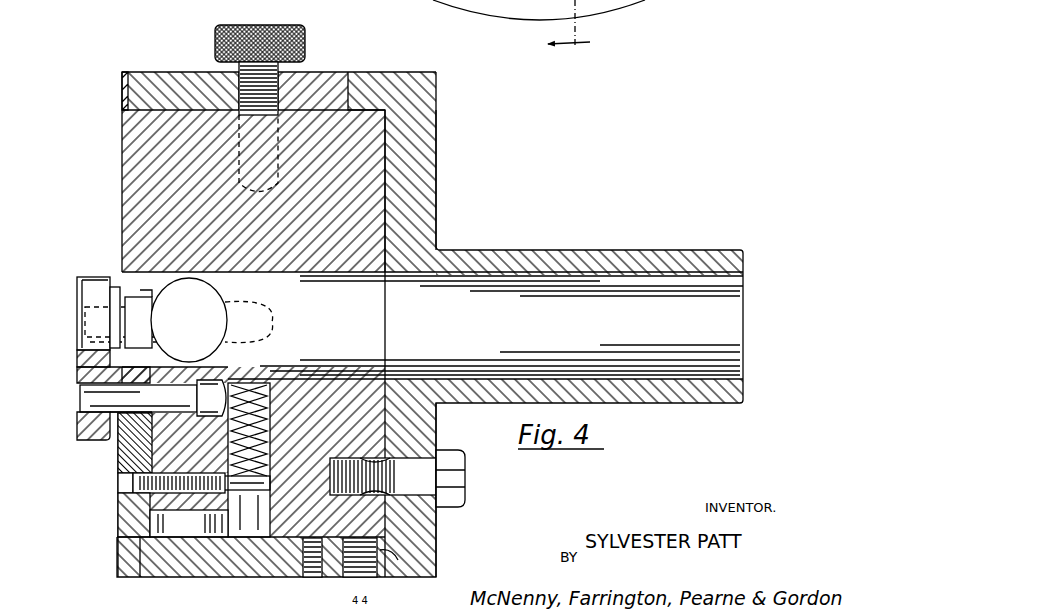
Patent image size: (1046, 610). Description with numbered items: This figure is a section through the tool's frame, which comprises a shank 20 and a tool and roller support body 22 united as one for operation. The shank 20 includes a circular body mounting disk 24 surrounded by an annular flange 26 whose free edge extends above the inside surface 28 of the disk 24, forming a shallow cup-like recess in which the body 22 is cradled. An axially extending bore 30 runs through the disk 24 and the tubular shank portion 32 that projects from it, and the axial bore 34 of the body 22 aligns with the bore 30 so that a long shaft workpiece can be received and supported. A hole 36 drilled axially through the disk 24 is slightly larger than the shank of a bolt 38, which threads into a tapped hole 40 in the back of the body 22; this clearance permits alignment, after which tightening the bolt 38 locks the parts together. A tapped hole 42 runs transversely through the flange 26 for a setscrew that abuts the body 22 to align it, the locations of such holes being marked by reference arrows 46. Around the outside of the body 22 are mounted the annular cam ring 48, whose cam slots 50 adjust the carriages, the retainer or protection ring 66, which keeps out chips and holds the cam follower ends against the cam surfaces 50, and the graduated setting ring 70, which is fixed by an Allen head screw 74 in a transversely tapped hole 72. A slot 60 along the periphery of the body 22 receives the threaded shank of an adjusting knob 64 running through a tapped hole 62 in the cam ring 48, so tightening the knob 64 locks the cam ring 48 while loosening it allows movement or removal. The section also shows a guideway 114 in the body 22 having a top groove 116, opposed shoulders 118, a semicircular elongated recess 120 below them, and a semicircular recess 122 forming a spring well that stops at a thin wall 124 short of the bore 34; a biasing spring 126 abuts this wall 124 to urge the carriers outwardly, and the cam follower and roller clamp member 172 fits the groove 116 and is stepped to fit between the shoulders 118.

The shank 20 is at (450, 118).
The tool and roller support body 22 is at (114, 150).
The body mounting disk 24 is at (438, 166).
The annular flange 26 is at (372, 70).
The inside surface 28 is at (387, 180).
The bore 30 is at (432, 276).
The tubular shank portion 32 is at (710, 248).
The axial bore 34 is at (330, 276).
The hole 36 is at (438, 512).
The bolt 38 is at (468, 484).
The tapped hole 40 is at (405, 458).
The tapped hole 42 is at (396, 562).
The reference arrow 46 is at (585, 48).
The cam ring 48 is at (150, 70).
The cam slot 50 is at (142, 568).
The slot 60 is at (236, 160).
The tapped hole 62 is at (240, 86).
The adjusting knob 64 is at (279, 22).
The retainer or protection ring 66 is at (120, 80).
The graduated setting ring 70 is at (336, 70).
The tapped hole 72 is at (352, 574).
The Allen head screw 74 is at (306, 572).
The guideway 114 is at (108, 278).
The groove 116 is at (116, 288).
The shoulder 118 is at (143, 296).
The semicircular elongated recess 120 is at (200, 292).
The semicircular recess 122 is at (262, 308).
The thin wall 124 is at (252, 378).
The biasing spring 126 is at (268, 402).
The cam follower and roller clamp member 172 is at (162, 445).